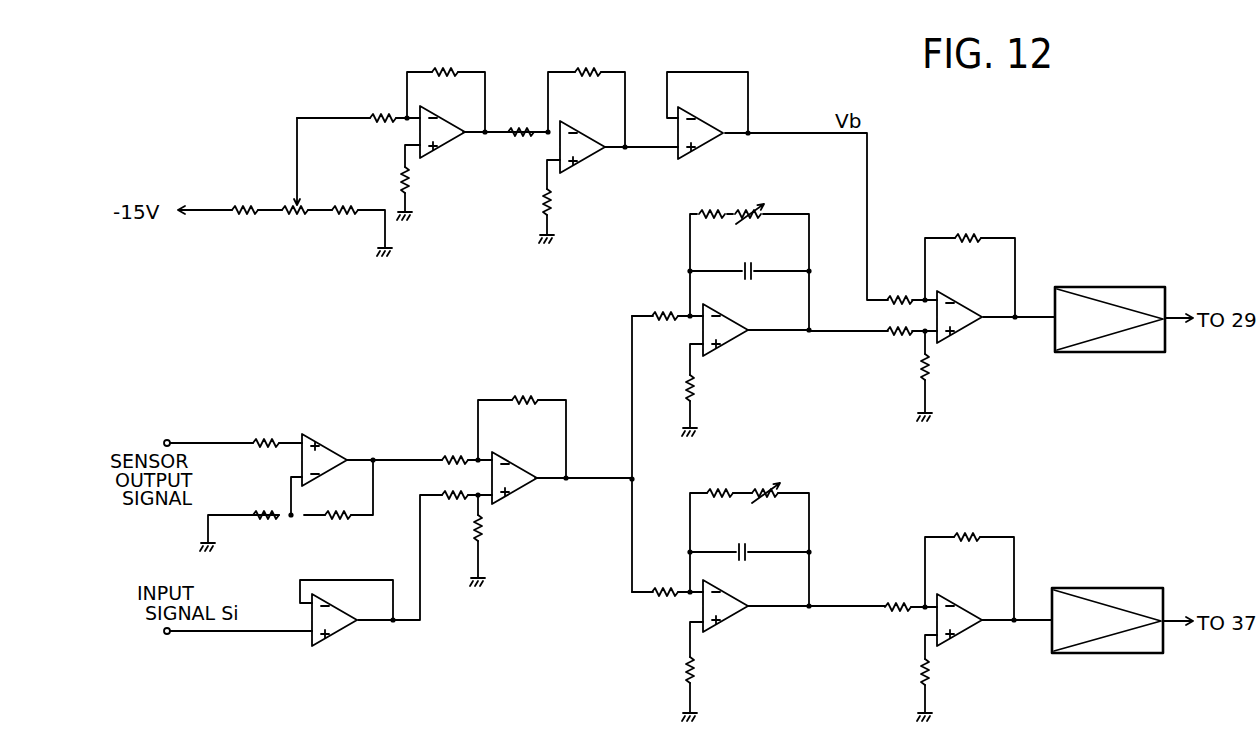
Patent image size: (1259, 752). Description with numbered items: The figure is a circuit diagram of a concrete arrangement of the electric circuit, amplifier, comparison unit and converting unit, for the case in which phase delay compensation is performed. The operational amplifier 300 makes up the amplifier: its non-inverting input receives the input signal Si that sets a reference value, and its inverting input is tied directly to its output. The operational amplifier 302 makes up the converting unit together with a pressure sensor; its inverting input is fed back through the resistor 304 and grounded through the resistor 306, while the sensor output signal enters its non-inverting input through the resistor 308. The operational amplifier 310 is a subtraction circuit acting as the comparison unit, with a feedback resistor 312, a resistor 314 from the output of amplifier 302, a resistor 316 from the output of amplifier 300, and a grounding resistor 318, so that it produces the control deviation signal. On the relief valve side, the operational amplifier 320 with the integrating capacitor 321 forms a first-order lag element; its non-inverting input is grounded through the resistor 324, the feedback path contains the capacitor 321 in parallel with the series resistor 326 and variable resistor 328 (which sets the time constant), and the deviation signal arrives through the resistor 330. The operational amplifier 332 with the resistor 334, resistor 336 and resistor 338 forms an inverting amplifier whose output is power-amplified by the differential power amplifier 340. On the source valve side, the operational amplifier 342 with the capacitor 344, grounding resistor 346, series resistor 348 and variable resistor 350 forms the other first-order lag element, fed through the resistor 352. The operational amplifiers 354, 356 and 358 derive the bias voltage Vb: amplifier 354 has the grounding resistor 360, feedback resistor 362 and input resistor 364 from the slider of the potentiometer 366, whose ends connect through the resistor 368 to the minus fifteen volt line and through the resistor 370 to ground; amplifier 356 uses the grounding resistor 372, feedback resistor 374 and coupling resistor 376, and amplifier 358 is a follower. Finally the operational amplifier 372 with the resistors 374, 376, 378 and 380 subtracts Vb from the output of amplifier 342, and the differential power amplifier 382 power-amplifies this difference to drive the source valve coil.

The operational amplifier 300 is at (350, 640).
The operational amplifier 302 is at (330, 440).
The resistor 304 is at (340, 520).
The resistor 306 is at (268, 520).
The resistor 308 is at (265, 438).
The operational amplifier 310 is at (520, 465).
The resistor 312 is at (525, 395).
The resistor 314 is at (450, 455).
The resistor 316 is at (445, 490).
The resistor 318 is at (485, 530).
The operational amplifier 320 is at (735, 622).
The capacitor 321 is at (749, 560).
The resistor 324 is at (700, 672).
The resistor 326 is at (723, 470).
The variable resistor 328 is at (770, 505).
The resistor 330 is at (660, 600).
The operational amplifier 332 is at (965, 605).
The resistor 334 is at (975, 505).
The resistor 336 is at (898, 600).
The resistor 338 is at (932, 672).
The differential power amplifier 340 is at (1115, 575).
The operational amplifier 342 is at (732, 343).
The capacitor 344 is at (752, 278).
The resistor 346 is at (697, 392).
The resistor 348 is at (716, 210).
The variable resistor 350 is at (755, 220).
The resistor 352 is at (666, 310).
The operational amplifier 354 is at (445, 150).
The operational amplifier 356 is at (582, 132).
The operational amplifier 358 is at (710, 125).
The resistor 360 is at (401, 175).
The resistor 362 is at (447, 68).
The resistor 364 is at (380, 113).
The potentiometer 366 is at (292, 204).
The resistor 368 is at (234, 205).
The resistor 370 is at (345, 205).
The operational amplifier 372 is at (543, 200).
The resistor 374 is at (580, 68).
The resistor 376 is at (520, 128).
The resistor 378 is at (900, 338).
The resistor 380 is at (920, 370).
The differential power amplifier 382 is at (1125, 285).